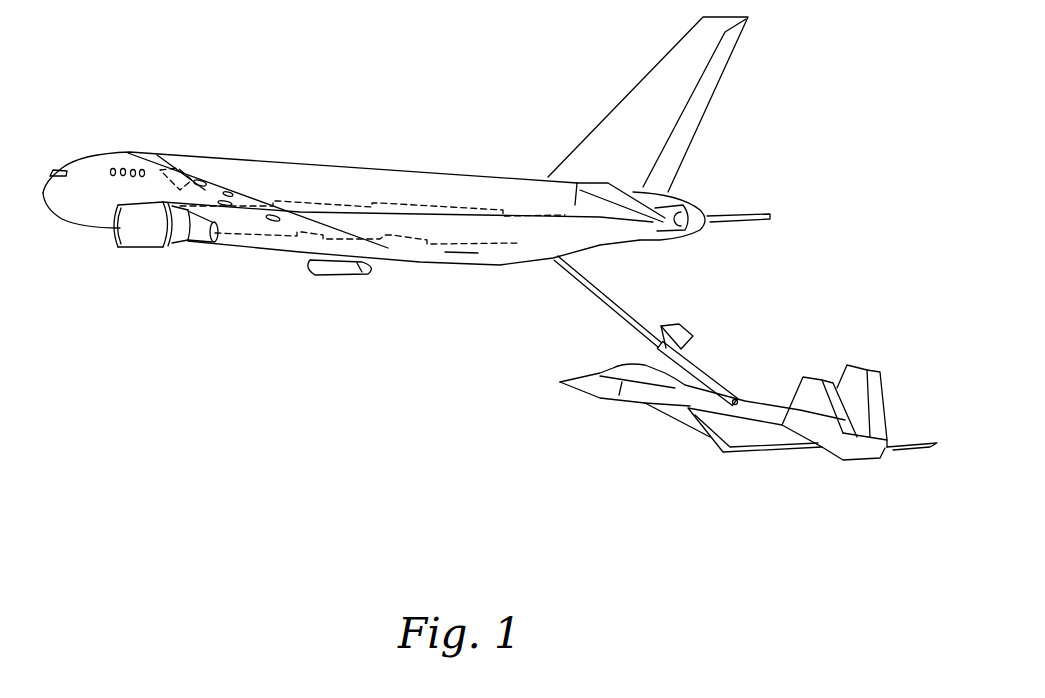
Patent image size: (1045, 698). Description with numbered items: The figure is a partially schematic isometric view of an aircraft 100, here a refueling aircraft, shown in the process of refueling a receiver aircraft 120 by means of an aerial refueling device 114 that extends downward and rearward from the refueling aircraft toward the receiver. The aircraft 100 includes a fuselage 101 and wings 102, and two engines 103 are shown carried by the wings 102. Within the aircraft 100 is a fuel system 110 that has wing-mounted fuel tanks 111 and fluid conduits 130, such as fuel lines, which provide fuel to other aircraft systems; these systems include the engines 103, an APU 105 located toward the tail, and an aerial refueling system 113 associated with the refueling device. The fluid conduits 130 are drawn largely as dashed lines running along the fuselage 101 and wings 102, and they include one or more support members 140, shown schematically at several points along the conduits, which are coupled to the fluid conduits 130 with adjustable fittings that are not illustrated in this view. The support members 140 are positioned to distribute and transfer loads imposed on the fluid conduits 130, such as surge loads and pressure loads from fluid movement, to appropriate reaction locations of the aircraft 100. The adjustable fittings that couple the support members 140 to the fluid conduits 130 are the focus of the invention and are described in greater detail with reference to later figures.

The aircraft 100 is at (180, 322).
The fuselage 101 is at (358, 177).
The wings 102 is at (180, 178).
The engines 103 is at (113, 230).
The APU 105 is at (693, 203).
The fuel system 110 is at (293, 284).
The wing-mounted fuel tanks 111 is at (177, 183).
The aerial refueling system 113 is at (537, 285).
The aerial refueling device 114 is at (587, 313).
The receiver aircraft 120 is at (687, 428).
The fluid conduits 130 is at (413, 253).
The support members 140 is at (280, 203).